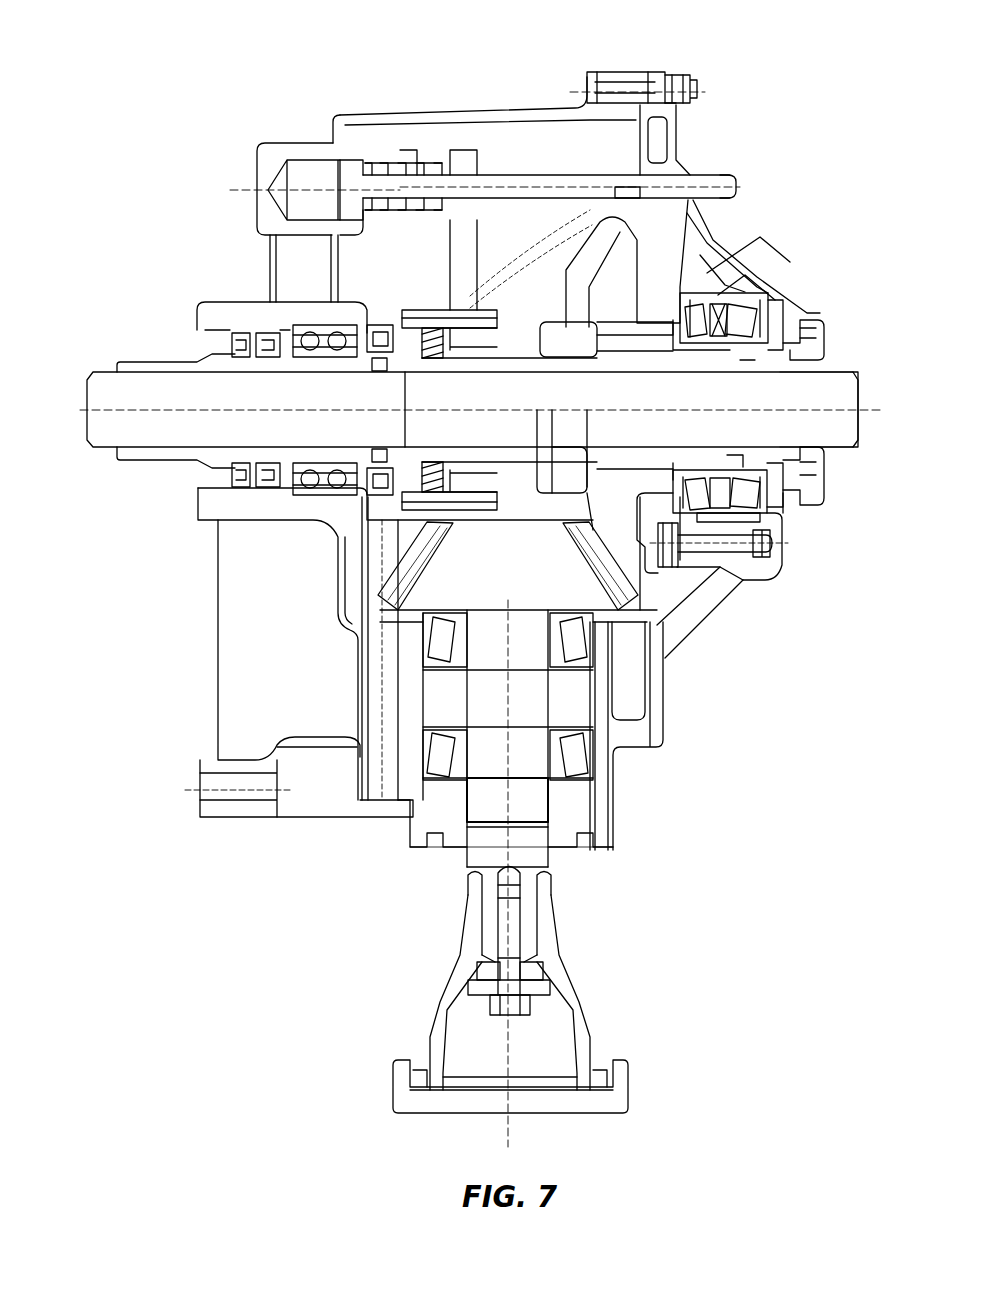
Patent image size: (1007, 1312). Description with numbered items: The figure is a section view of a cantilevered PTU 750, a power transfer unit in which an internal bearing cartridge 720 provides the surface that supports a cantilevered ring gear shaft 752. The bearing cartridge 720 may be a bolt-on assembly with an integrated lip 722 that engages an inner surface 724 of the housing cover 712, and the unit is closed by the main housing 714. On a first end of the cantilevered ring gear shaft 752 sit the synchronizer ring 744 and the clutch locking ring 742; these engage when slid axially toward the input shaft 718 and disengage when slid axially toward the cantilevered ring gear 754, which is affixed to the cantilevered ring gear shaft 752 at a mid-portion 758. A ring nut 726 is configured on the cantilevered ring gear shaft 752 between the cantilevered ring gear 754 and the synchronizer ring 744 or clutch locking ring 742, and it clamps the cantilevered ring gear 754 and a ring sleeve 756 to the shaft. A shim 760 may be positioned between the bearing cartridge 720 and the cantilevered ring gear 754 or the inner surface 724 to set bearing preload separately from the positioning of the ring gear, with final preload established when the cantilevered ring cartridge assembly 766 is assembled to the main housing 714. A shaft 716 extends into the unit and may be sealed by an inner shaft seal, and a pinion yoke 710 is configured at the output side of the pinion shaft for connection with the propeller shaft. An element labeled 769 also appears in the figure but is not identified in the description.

The pinion yoke 710 is at (590, 1025).
The housing cover 712 is at (652, 72).
The main housing 714 is at (615, 70).
The shaft 716 is at (368, 393).
The input shaft 718 is at (157, 463).
The bearing cartridge 720 is at (785, 305).
The integrated lip 722 is at (715, 262).
The inner surface 724 is at (727, 292).
The ring nut 726 is at (565, 325).
The clutch locking ring 742 is at (455, 325).
The synchronizer ring 744 is at (520, 479).
The cantilevered PTU 750 is at (255, 88).
The cantilevered ring gear shaft 752 is at (818, 345).
The cantilevered ring gear 754 is at (705, 205).
The ring sleeve 756 is at (820, 485).
The mid-portion 758 is at (636, 360).
The shim 760 is at (742, 585).
The cantilevered ring cartridge assembly 766 is at (808, 572).
The housing 769 is at (335, 528).